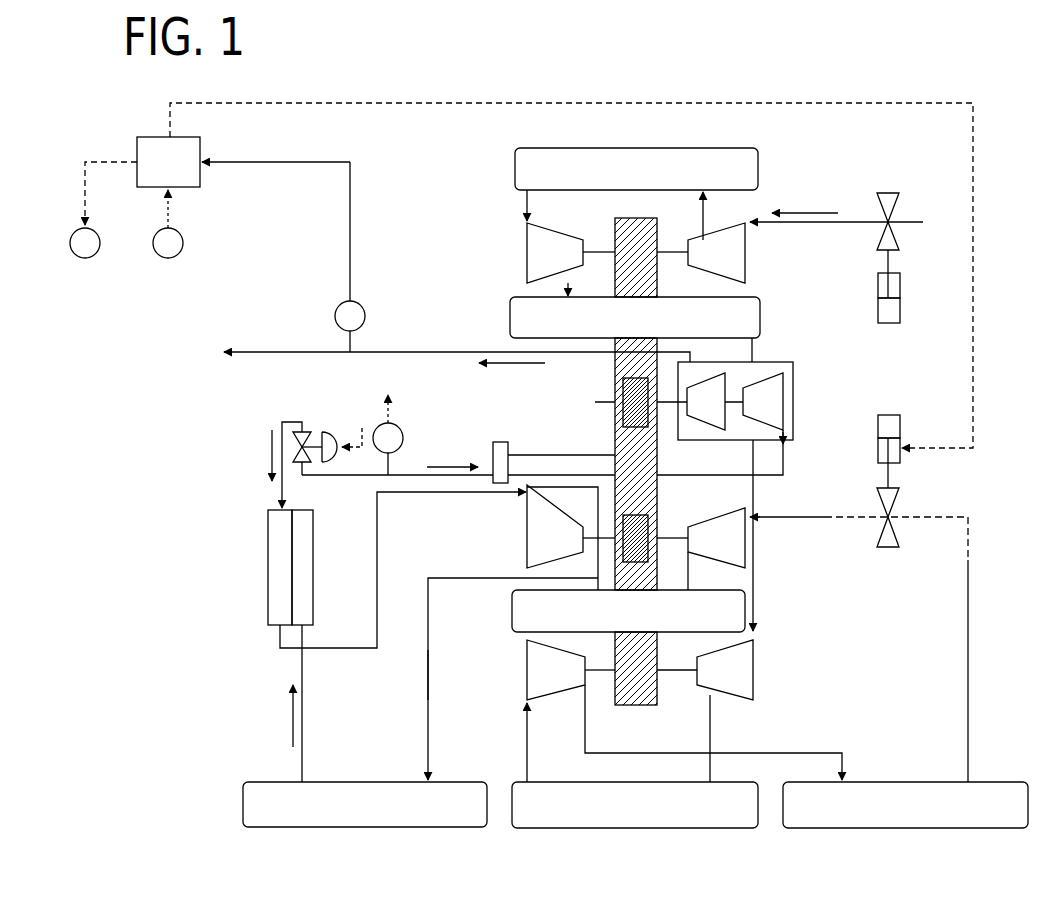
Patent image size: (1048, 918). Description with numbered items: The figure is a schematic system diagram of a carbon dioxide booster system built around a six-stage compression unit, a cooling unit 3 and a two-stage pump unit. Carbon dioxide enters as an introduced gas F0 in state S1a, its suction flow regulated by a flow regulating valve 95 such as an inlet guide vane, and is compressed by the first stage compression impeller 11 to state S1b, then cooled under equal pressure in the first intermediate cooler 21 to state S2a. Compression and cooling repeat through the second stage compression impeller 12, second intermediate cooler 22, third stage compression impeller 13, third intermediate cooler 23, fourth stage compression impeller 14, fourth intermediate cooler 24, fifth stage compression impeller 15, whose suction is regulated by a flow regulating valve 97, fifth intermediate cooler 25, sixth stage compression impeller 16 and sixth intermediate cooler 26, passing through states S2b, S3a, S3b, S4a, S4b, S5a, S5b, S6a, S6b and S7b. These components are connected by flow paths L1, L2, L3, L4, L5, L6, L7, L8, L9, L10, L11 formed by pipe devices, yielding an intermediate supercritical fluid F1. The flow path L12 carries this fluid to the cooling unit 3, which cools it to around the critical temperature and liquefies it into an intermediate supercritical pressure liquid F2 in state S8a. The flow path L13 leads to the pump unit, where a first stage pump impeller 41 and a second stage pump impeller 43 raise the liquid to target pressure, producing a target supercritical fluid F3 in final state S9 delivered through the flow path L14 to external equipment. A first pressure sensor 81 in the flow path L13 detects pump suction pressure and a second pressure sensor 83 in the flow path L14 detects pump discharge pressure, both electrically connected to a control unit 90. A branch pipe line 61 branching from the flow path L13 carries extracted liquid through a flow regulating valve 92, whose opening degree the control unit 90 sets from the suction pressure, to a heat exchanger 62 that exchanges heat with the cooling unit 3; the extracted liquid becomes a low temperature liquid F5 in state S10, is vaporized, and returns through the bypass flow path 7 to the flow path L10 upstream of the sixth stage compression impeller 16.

The control unit 90 is at (150, 137).
The flow regulating valve 92 is at (325, 432).
The first pressure sensor 81 is at (395, 424).
The second pressure sensor 83 is at (364, 310).
The first intermediate cooler 21 is at (762, 162).
The second intermediate cooler 22 is at (510, 322).
The third intermediate cooler 23 is at (625, 830).
The fourth intermediate cooler 24 is at (900, 830).
The fifth intermediate cooler 25 is at (512, 612).
The sixth intermediate cooler 26 is at (365, 830).
The first stage compression impeller 11 is at (746, 262).
The second stage compression impeller 12 is at (526, 258).
The third stage compression impeller 13 is at (756, 684).
The fourth stage compression impeller 14 is at (527, 672).
The fifth stage compression impeller 15 is at (748, 560).
The sixth stage compression impeller 16 is at (526, 548).
The first stage pump impeller 41 is at (775, 365).
The second stage pump impeller 43 is at (706, 432).
The flow regulating valve 95 is at (896, 212).
The flow regulating valve 97 is at (896, 508).
The branch pipe line 61 is at (292, 432).
The heat exchanger 62 is at (268, 575).
The cooling unit 3 is at (316, 595).
The bypass flow path 7 is at (377, 552).
The flow path L1 is at (708, 222).
The flow path L2 is at (524, 207).
The flow path L3 is at (558, 286).
The flow path L4 is at (756, 590).
The flow path L5 is at (708, 742).
The flow path L6 is at (525, 760).
The flow path L7 is at (800, 753).
The flow path L8 is at (972, 692).
The flow path L9 is at (672, 562).
The flow path L10 is at (530, 578).
The flow path L11 is at (428, 695).
The flow path L12 is at (305, 710).
The flow path L13 is at (322, 478).
The flow path L14 is at (370, 356).
The state S1a is at (766, 240).
The state S1b is at (682, 216).
The state S2a is at (551, 213).
The state S2b is at (593, 286).
The state S3a is at (779, 633).
The state S3b is at (733, 771).
The state S4a is at (498, 713).
The state S4b is at (868, 773).
The state S5a is at (772, 532).
The state S5b is at (708, 571).
The state S6a is at (549, 503).
The state S6b is at (403, 770).
The state S7b is at (336, 640).
The state S8a is at (740, 456).
The state S9 is at (245, 340).
The state S10 is at (244, 500).
The introduced gas F0 is at (808, 212).
The intermediate supercritical fluid F1 is at (290, 735).
The intermediate supercritical pressure liquid F2 is at (452, 464).
The target supercritical fluid F3 is at (510, 366).
The low temperature liquid F5 is at (268, 452).